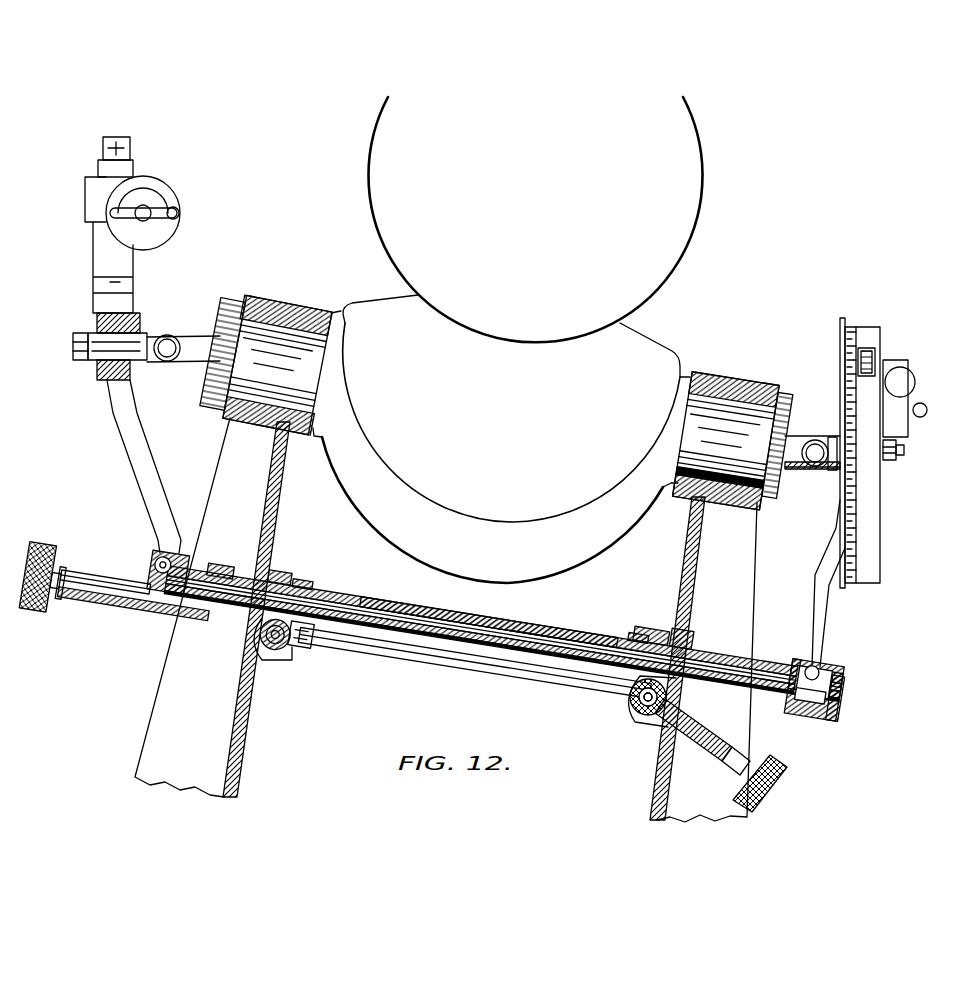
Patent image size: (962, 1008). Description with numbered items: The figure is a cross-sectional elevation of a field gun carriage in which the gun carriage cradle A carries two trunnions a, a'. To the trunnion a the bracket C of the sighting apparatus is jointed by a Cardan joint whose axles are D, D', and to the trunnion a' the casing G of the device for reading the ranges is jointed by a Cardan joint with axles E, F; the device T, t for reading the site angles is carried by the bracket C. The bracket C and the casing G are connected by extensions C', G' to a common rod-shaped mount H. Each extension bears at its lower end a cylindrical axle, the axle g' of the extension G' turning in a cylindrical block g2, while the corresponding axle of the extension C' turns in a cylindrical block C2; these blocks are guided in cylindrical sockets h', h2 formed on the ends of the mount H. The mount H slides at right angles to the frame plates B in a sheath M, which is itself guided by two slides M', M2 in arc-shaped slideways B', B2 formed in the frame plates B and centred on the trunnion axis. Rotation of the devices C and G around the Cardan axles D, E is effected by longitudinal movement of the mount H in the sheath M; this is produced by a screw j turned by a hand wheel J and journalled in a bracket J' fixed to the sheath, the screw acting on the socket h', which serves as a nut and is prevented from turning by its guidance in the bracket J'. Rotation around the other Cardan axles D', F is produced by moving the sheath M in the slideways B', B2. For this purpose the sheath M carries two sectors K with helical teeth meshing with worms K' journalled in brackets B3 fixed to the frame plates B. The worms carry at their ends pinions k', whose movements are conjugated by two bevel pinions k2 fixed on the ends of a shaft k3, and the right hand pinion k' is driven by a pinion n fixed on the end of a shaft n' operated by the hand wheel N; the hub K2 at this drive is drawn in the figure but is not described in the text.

The gun carriage cradle A is at (395, 524).
The bracket of the sighting apparatus C is at (111, 225).
The extension of the bracket C' is at (145, 466).
The cylindrical block C2 is at (150, 571).
The Cardan joint axle D is at (168, 332).
The Cardan joint axle D' is at (141, 360).
The trunnion a is at (266, 353).
The trunnion a' is at (733, 427).
The Cardan joint axle E is at (816, 448).
The Cardan joint axle F is at (898, 456).
The device for reading the ranges G is at (877, 453).
The extension of the casing G' is at (811, 583).
The device for reading the site angles T is at (908, 402).
The device for reading the site angles t is at (927, 413).
The frame plates of the gun carriage B is at (438, 620).
The arc-shaped slideway B' is at (290, 565).
The arc-shaped slideway B2 is at (670, 649).
The bracket B3 is at (292, 660).
The rod-shaped mount H is at (438, 622).
The hand wheel J is at (31, 561).
The screw j is at (76, 592).
The bracket J' is at (449, 643).
The sector K is at (470, 610).
The worm K' is at (466, 670).
The bearing hub K2 is at (628, 707).
The pinion k' is at (461, 689).
The bevel pinion k2 is at (306, 652).
The shaft k3 is at (425, 662).
The sheath M is at (489, 610).
The slide M' is at (225, 566).
The slide M2 is at (696, 649).
The cylindrical socket h' is at (189, 551).
The cylindrical socket h2 is at (795, 666).
The cylindrical axle g' is at (830, 653).
The cylindrical block g2 is at (833, 681).
The pinion n is at (638, 733).
The shaft n' is at (702, 746).
The hand wheel N is at (786, 766).